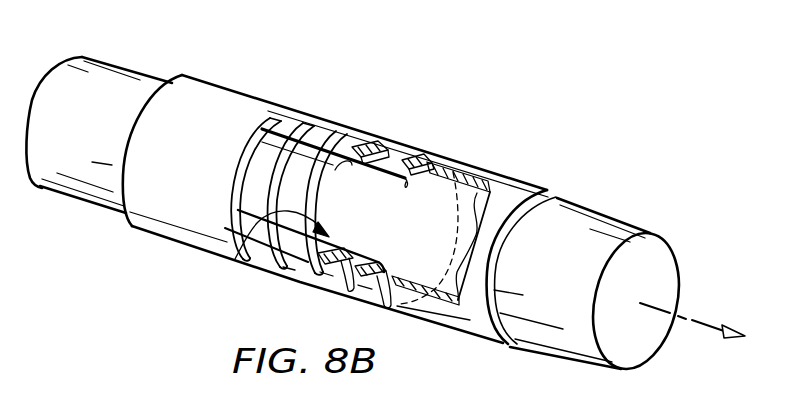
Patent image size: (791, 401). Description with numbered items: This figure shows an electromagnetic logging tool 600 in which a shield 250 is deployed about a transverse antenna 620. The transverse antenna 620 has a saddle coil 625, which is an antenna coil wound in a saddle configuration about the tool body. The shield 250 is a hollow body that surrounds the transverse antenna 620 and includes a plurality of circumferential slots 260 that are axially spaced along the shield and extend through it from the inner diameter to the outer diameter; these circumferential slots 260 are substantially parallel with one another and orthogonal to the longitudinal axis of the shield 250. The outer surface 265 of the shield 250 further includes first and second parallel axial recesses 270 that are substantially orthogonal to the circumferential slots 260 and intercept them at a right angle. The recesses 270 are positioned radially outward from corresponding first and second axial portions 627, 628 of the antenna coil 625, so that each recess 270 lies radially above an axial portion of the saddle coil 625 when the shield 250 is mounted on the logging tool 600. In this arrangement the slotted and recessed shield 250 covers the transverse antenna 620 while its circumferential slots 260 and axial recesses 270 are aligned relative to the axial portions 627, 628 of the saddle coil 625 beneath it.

The shield 250 is at (472, 145).
The outer surface 265 is at (209, 82).
The circumferential slots 260 is at (233, 178).
The recess 270 is at (263, 127).
The transverse antenna 620 is at (245, 259).
The saddle coil 625 is at (407, 181).
The first axial portion 627 is at (350, 244).
The second axial portion 628 is at (347, 129).
The logging tool 600 is at (630, 205).